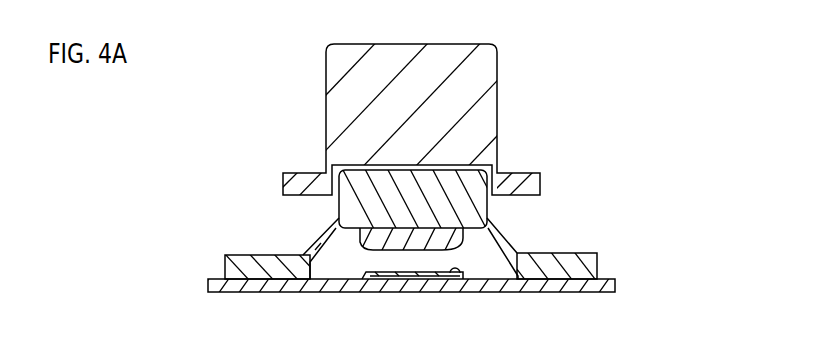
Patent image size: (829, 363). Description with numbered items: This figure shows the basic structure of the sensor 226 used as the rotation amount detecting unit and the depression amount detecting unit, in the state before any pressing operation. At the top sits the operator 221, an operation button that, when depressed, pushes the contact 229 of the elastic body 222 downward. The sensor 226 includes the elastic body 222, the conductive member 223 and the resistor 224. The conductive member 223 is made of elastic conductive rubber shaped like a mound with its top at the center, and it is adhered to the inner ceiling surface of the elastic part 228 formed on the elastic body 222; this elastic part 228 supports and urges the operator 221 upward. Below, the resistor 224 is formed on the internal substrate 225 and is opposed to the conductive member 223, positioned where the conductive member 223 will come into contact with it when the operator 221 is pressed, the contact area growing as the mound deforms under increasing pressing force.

The operator 221 is at (497, 67).
The elastic body 222 is at (585, 253).
The conductive member 223 is at (366, 247).
The resistor 224 is at (462, 276).
The internal substrate 225 is at (587, 292).
The sensor 226 is at (668, 185).
The elastic part 228 is at (323, 237).
The contact 229 is at (477, 193).